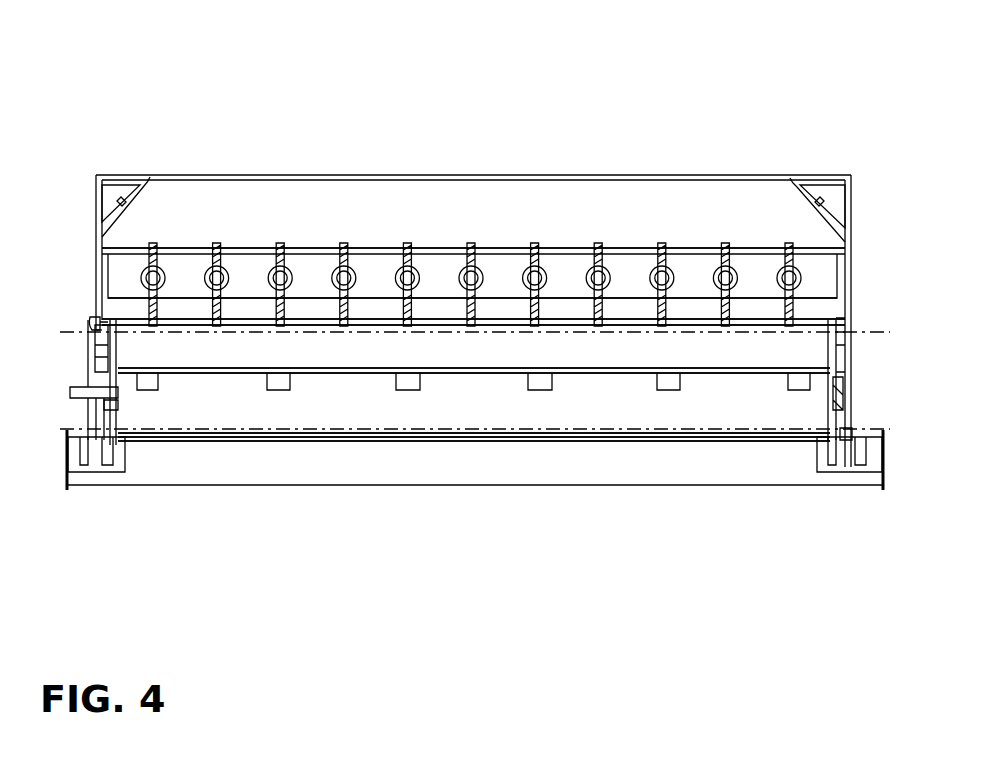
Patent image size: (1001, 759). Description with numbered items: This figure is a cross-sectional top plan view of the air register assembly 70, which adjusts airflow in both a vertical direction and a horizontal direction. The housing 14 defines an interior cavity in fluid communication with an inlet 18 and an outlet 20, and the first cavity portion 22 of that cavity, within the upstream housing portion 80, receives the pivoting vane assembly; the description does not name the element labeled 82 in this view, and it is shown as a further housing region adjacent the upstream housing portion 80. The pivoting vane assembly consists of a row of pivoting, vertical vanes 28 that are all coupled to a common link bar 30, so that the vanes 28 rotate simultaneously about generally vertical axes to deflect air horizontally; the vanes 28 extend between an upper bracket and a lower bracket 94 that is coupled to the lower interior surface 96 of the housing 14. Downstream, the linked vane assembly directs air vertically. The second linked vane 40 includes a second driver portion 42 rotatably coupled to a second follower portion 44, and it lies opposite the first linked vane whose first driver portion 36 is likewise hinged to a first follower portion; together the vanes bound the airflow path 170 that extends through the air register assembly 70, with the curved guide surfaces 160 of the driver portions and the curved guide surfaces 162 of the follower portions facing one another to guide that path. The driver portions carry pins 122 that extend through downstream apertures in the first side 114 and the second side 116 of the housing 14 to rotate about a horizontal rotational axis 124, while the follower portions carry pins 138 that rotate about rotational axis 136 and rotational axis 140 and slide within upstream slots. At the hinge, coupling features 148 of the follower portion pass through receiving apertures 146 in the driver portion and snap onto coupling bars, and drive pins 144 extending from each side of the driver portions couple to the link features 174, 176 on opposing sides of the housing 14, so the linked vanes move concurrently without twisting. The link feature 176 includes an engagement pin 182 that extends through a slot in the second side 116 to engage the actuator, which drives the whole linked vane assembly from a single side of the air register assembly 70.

The housing 14 is at (851, 246).
The inlet 18 is at (671, 178).
The outlet 20 is at (752, 456).
The first cavity portion 22 is at (166, 195).
The vanes 28 is at (197, 266).
The link bar 30 is at (250, 250).
The first driver portion 36 is at (309, 235).
The second linked vane 40 is at (412, 448).
The second driver portion 42 is at (196, 416).
The second follower portion 44 is at (326, 352).
The air register assembly 70 is at (728, 148).
The upstream housing portion 80 is at (97, 206).
The left bracket 82 is at (90, 347).
The lower bracket 94 is at (108, 273).
The lower interior surface 96 is at (771, 196).
The first side 114 is at (858, 348).
The second side 116 is at (87, 408).
The pins 122 is at (103, 438).
The rotational axis 124 is at (643, 430).
The rotational axis 136 is at (857, 326).
The pins 138 is at (105, 322).
The rotational axis 140 is at (679, 332).
The drive pins 144 is at (118, 410).
The receiving aperture 146 is at (281, 392).
The coupling features 148 is at (268, 402).
The curved guide surfaces 160 is at (583, 407).
The curved guide surfaces 162 is at (475, 356).
The airflow path 170 is at (376, 300).
The link feature 174 is at (882, 455).
The link feature 176 is at (114, 404).
The engagement pin 182 is at (80, 392).